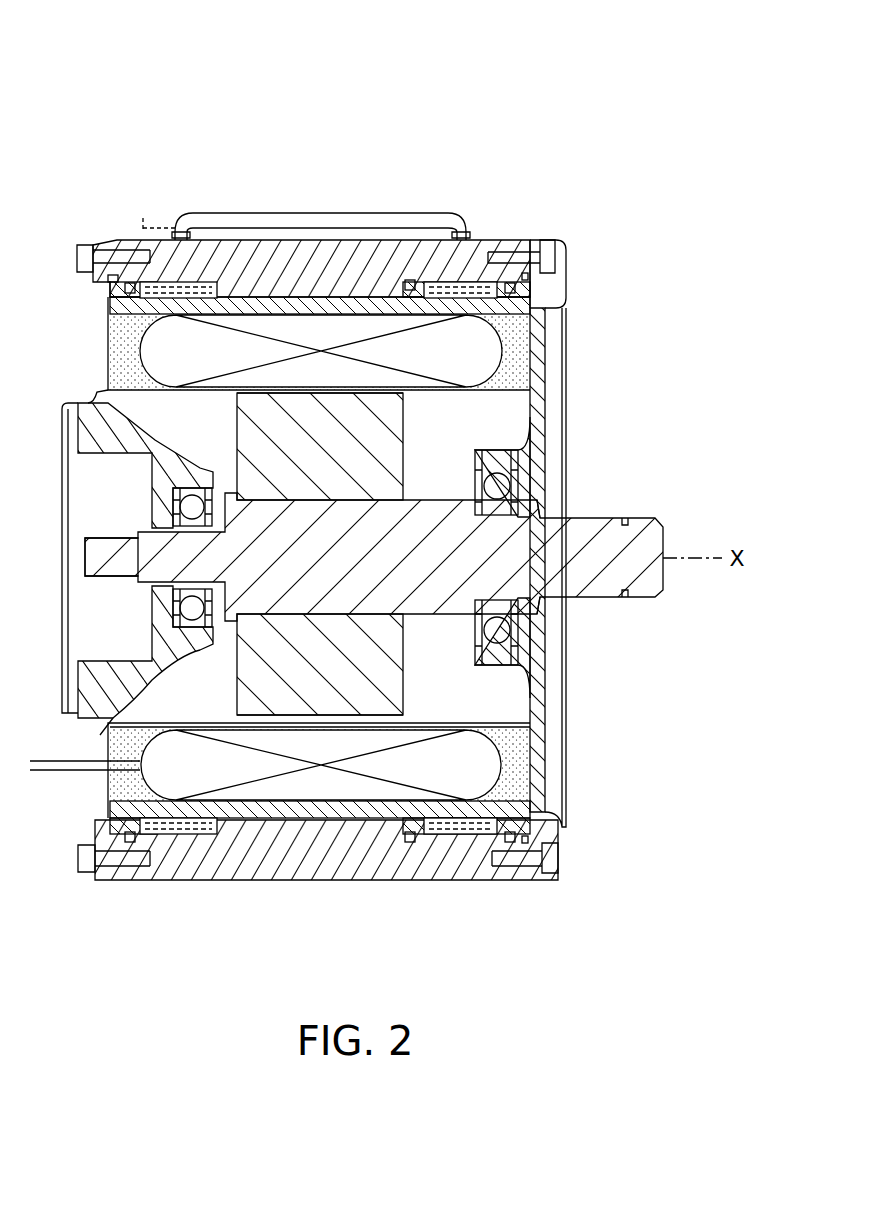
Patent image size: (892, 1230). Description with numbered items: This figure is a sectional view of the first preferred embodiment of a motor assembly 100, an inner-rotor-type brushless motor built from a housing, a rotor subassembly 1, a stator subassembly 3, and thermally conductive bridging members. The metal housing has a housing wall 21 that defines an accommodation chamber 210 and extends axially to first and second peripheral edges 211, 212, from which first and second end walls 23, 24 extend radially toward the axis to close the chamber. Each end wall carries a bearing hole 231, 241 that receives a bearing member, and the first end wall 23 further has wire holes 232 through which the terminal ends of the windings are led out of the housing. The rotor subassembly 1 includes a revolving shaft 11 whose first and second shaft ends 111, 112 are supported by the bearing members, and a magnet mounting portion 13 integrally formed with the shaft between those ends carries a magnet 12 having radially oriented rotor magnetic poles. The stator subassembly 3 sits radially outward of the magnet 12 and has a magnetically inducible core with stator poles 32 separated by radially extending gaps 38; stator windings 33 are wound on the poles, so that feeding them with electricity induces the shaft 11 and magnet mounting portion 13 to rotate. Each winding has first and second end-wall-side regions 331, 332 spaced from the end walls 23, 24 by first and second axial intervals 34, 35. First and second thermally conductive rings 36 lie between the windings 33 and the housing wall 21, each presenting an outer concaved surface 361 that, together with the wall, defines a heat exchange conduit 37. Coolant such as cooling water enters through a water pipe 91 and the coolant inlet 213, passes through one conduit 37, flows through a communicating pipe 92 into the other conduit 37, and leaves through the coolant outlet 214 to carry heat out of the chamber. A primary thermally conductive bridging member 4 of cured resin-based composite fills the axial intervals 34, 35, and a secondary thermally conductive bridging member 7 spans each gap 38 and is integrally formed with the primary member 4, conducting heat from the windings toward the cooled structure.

The motor assembly 100 is at (165, 82).
The rotor subassembly 1 is at (352, 523).
The revolving shaft 11 is at (605, 512).
The first shaft end 111 is at (182, 545).
The second shaft end 112 is at (500, 575).
The magnet 12 is at (393, 440).
The magnet mounting portion 13 is at (242, 680).
The housing wall 21 is at (321, 559).
The accommodation chamber 210 is at (338, 880).
The first peripheral edge 211 is at (105, 880).
The second peripheral edge 212 is at (540, 880).
The coolant inlet 213 is at (478, 240).
The coolant outlet 214 is at (200, 240).
The first end wall 23 is at (107, 617).
The bearing hole 231 is at (175, 603).
The wire holes 232 is at (97, 748).
The second end wall 24 is at (566, 533).
The bearing hole 241 is at (572, 455).
The stator subassembly 3 is at (337, 566).
The stator poles 32 is at (483, 410).
The stator windings 33 is at (496, 336).
The first end-wall-side region 331 is at (155, 330).
The second end-wall-side region 332 is at (470, 300).
The first axial interval 34 is at (120, 357).
The second axial interval 35 is at (520, 370).
The thermally conductive rings 36 is at (120, 300).
The outer concaved surface 361 is at (207, 835).
The heat exchange conduit 37 is at (160, 875).
The radially extending gaps 38 is at (108, 413).
The primary thermally conductive bridging member 4 is at (508, 376).
The secondary thermally conductive bridging member 7 is at (500, 280).
The water pipe 91 is at (150, 232).
The communicating pipe 92 is at (352, 212).